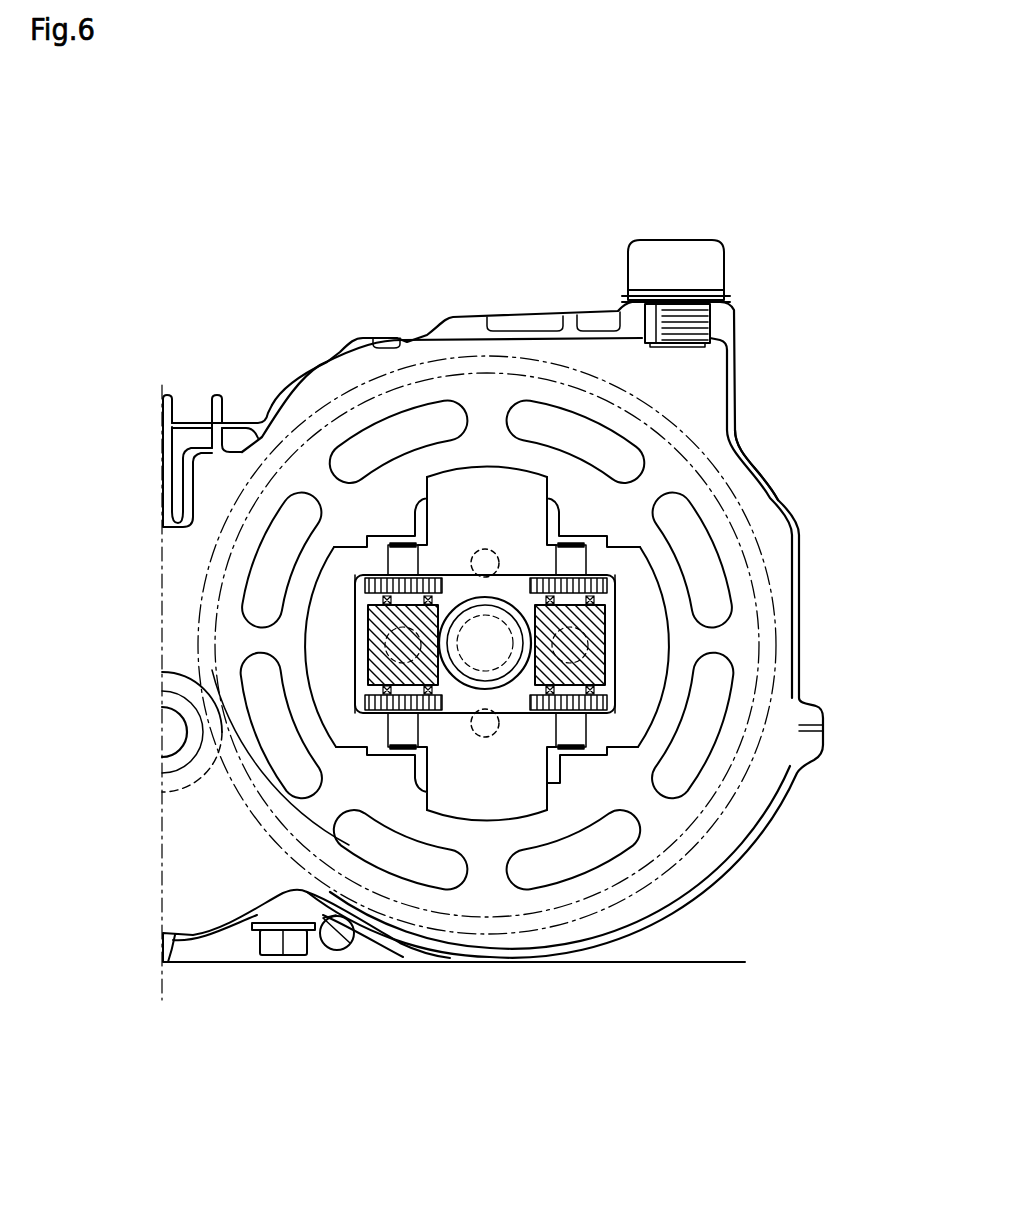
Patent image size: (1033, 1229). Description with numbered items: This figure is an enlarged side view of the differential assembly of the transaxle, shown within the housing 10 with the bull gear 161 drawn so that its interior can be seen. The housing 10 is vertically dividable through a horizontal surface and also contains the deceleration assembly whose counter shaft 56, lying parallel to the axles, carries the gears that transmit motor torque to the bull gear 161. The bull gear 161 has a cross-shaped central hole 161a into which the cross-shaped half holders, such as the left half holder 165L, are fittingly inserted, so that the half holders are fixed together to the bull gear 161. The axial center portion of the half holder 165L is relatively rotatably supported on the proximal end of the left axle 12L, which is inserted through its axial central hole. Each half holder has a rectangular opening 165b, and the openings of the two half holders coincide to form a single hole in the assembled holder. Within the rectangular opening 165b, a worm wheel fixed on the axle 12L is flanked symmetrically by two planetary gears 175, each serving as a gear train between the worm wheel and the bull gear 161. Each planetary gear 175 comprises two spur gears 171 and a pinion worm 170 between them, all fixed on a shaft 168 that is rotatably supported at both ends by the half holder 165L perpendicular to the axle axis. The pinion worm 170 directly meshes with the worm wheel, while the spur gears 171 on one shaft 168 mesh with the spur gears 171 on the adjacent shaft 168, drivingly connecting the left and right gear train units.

The housing 10 is at (764, 483).
The left axle 12L is at (489, 650).
The counter shaft 56 is at (168, 745).
The bull gear 161 is at (692, 437).
The cross-shaped central hole 161a is at (556, 766).
The left half holder 165L is at (437, 520).
The rectangular opening 165b is at (521, 574).
The shaft 168 is at (400, 553).
The pinion worm 170 is at (403, 645).
The spur gear 171 is at (400, 586).
The planetary gear 175 is at (95, 592).